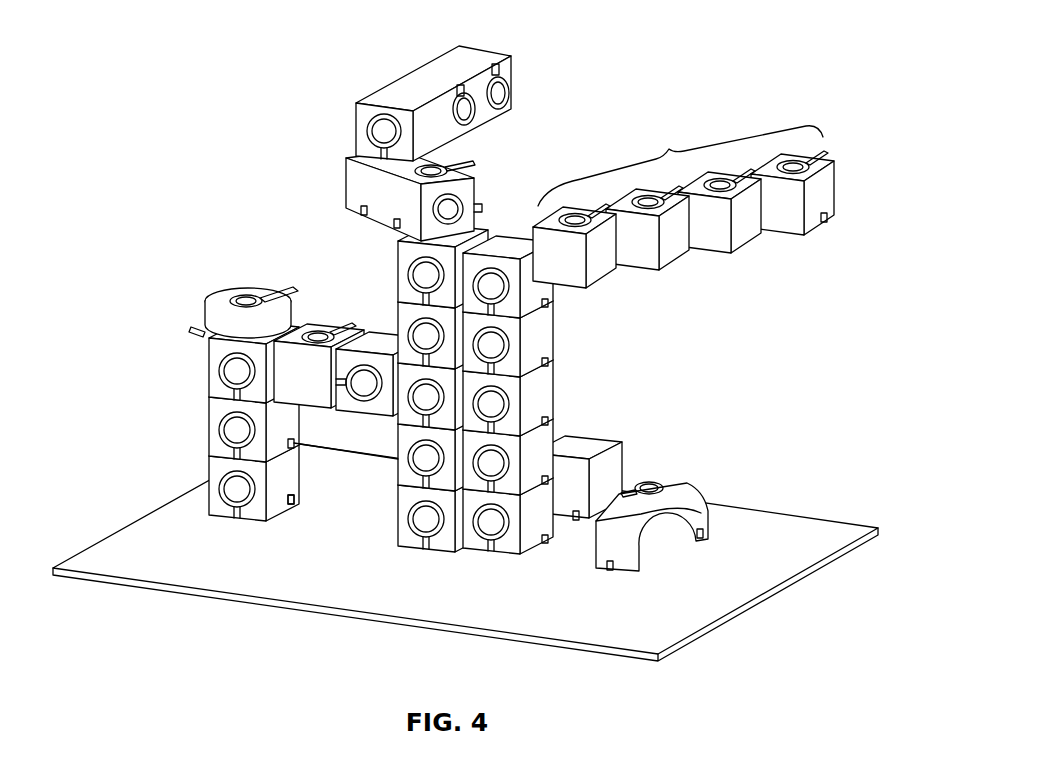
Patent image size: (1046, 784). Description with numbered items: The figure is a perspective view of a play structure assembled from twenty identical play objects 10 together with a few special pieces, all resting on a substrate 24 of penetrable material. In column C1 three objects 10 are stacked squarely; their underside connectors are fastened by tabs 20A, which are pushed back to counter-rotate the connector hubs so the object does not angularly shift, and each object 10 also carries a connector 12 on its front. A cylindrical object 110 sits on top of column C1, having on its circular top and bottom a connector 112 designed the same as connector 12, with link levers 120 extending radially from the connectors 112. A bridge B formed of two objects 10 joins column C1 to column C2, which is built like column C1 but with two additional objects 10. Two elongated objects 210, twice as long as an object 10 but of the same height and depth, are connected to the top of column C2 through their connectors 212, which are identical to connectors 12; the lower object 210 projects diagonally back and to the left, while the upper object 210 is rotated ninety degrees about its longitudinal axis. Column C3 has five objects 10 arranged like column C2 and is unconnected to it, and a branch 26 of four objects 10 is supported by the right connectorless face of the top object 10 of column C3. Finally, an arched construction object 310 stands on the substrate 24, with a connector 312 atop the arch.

The play object 10 is at (435, 404).
The connector 12 is at (793, 155).
The substrate 24 is at (838, 538).
The branch 26 is at (670, 138).
The cylindrical object 110 is at (213, 298).
The connector 112 is at (244, 297).
The link lever 120 is at (288, 289).
The object 210 is at (452, 58).
The connector 212 is at (498, 94).
The construction object 310 is at (700, 493).
The clamp connector ring 312 is at (657, 485).
The tab 20A is at (826, 220).
The bridge B is at (372, 404).
The column C1 is at (220, 522).
The column C2 is at (397, 557).
The column C3 is at (483, 560).